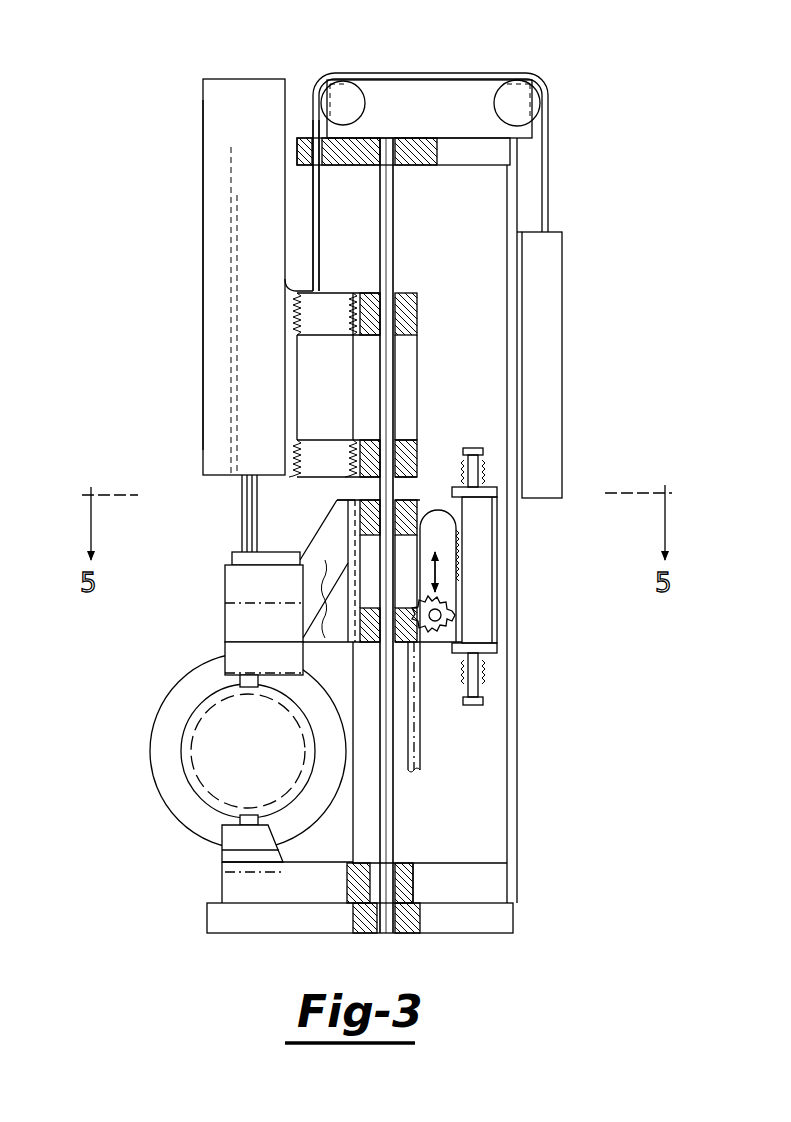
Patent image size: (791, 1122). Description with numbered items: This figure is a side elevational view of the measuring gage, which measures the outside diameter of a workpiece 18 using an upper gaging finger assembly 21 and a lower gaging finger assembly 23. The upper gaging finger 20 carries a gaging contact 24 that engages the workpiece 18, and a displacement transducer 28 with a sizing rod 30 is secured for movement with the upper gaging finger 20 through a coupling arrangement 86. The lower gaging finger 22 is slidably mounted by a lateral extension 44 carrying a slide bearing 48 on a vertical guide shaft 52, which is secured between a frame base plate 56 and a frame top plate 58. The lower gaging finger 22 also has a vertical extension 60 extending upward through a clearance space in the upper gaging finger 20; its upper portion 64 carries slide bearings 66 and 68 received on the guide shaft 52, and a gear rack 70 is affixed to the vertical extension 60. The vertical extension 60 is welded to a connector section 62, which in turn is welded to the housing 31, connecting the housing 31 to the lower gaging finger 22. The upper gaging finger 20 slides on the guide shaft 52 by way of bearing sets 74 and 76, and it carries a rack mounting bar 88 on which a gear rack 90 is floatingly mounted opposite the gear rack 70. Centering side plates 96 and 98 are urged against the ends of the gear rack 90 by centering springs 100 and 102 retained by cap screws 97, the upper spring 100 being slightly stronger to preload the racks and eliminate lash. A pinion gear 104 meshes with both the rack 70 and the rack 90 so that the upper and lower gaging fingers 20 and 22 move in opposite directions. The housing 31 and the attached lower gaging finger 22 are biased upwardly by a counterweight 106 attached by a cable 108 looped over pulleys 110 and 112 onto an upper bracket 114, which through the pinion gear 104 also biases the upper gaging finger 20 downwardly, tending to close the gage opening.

The workpiece 18 is at (152, 745).
The upper gaging finger 20 is at (225, 621).
The upper gaging finger assembly 21 is at (307, 545).
The lower gaging finger 22 is at (220, 862).
The lower gaging finger assembly 23 is at (220, 877).
The gaging contact 24 is at (225, 652).
The displacement transducer 28 is at (203, 348).
The sizing rod 30 is at (243, 487).
The housing 31 is at (203, 273).
The lateral extension 44 is at (222, 900).
The slide bearing 48 is at (338, 933).
The vertical guide shaft 52 is at (378, 798).
The frame base plate 56 is at (450, 934).
The frame top plate 58 is at (436, 152).
The vertical extension 60 is at (415, 498).
The connector section 62 is at (338, 292).
The upper portion 64 is at (420, 316).
The slide bearing 66 is at (398, 292).
The slide bearing 68 is at (400, 440).
The gear rack 70 is at (413, 772).
The bearing set 74 is at (360, 500).
The bearing set 76 is at (370, 643).
The coupling arrangement 86 is at (232, 553).
The rack mounting bar 88 is at (470, 605).
The gear rack 90 is at (452, 657).
The centering side plate 96 is at (492, 487).
The cap screw 97 is at (466, 452).
The centering side plate 98 is at (497, 662).
The centering spring 100 is at (484, 456).
The centering spring 102 is at (478, 675).
The pinion gear 104 is at (440, 600).
The counterweight 106 is at (562, 291).
The cable 108 is at (319, 215).
The pulley 110 is at (366, 112).
The pulley 112 is at (495, 108).
The upper bracket 114 is at (412, 88).